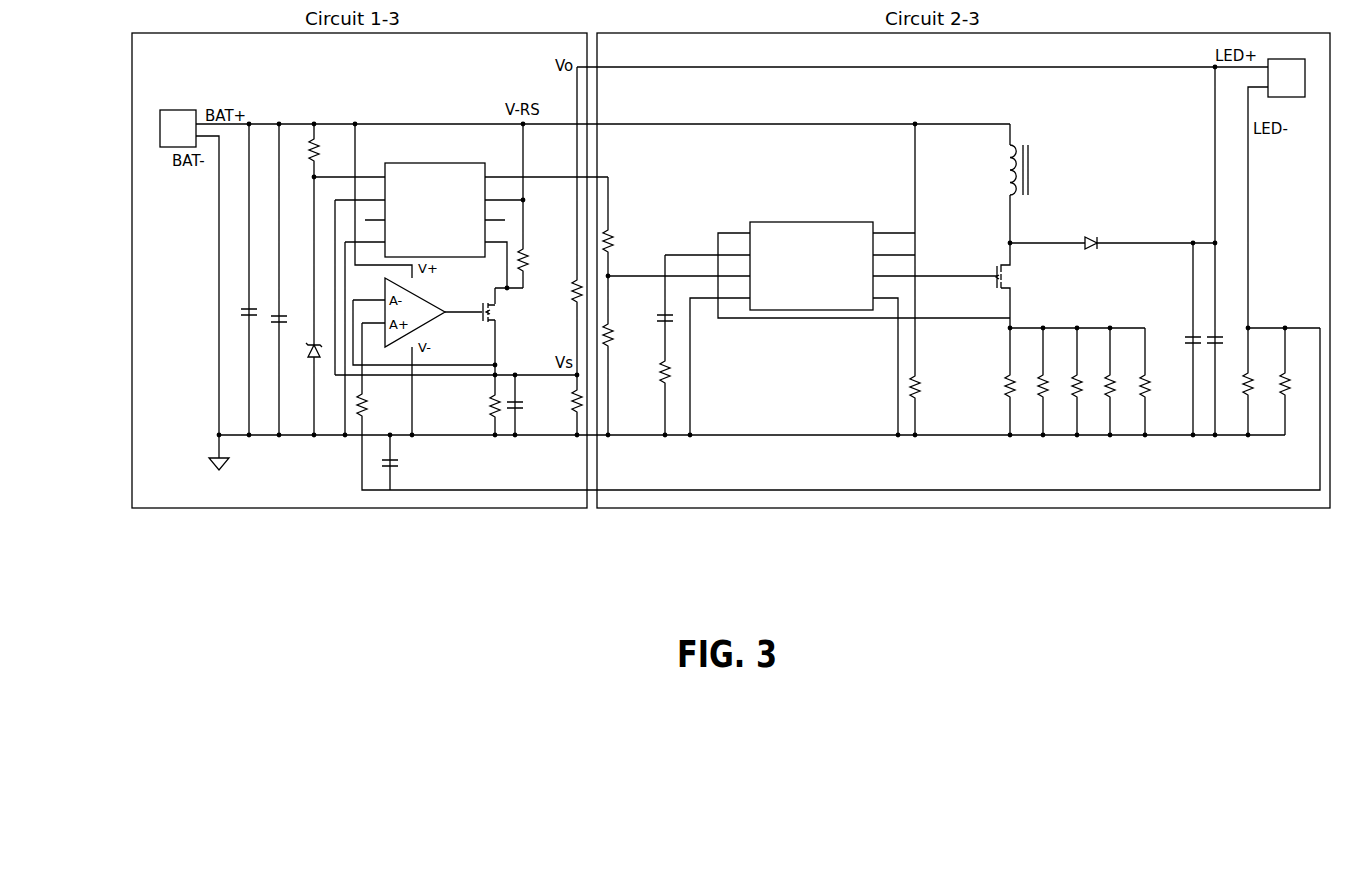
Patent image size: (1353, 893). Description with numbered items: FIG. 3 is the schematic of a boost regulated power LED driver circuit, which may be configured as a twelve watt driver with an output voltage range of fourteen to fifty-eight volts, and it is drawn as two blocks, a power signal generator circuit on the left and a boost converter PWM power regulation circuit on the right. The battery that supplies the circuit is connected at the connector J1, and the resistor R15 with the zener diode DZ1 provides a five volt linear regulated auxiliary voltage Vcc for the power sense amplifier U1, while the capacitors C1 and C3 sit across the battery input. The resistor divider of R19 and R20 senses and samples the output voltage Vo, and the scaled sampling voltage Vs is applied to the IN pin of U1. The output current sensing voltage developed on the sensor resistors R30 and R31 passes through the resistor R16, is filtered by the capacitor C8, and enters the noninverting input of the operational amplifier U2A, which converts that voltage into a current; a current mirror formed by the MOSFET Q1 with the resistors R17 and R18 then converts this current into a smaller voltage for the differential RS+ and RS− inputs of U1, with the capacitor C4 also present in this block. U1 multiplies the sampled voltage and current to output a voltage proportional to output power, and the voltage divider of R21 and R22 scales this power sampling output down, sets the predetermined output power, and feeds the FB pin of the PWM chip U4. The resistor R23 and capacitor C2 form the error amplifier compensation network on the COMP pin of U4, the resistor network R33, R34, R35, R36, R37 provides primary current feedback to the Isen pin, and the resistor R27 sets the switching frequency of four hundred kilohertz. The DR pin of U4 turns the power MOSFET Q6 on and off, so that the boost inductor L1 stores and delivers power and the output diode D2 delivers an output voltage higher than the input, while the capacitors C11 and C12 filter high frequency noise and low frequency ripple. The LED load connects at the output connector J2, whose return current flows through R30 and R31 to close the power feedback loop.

The battery connector J1 is at (178, 119).
The resistor R15 is at (330, 150).
The capacitor C1 is at (257, 296).
The capacitor C3 is at (287, 307).
The zener diode DZ1 is at (302, 359).
The power sense amplifier U1 is at (435, 201).
The operational amplifier U2A is at (429, 312).
The MOSFET Q1 is at (502, 312).
The resistor R17 is at (540, 260).
The resistor R19 is at (561, 291).
The resistor R20 is at (563, 407).
The resistor R18 is at (480, 406).
The capacitor C4 is at (525, 396).
The resistor R16 is at (378, 405).
The capacitor C8 is at (403, 464).
The resistor R21 is at (622, 234).
The resistor R22 is at (622, 331).
The capacitor C2 is at (658, 308).
The resistor R23 is at (653, 366).
The PWM chip U4 is at (811, 256).
The resistor R27 is at (931, 379).
The boost inductor L1 is at (1032, 170).
The output diode D2 is at (1090, 231).
The power MOSFET Q6 is at (1018, 277).
The resistor R33 is at (997, 379).
The resistor R34 is at (1030, 379).
The resistor R35 is at (1065, 379).
The resistor R36 is at (1098, 379).
The resistor R37 is at (1132, 379).
The capacitor C11 is at (1177, 340).
The capacitor C12 is at (1226, 344).
The output current sensor resistor R30 is at (1263, 368).
The output current sensor resistor R31 is at (1300, 376).
The output connector J2 is at (1286, 69).